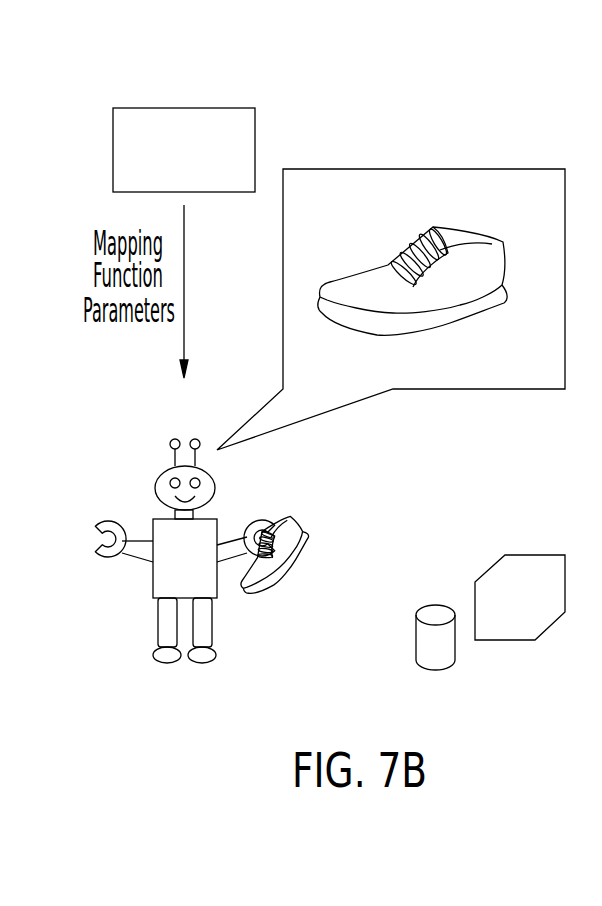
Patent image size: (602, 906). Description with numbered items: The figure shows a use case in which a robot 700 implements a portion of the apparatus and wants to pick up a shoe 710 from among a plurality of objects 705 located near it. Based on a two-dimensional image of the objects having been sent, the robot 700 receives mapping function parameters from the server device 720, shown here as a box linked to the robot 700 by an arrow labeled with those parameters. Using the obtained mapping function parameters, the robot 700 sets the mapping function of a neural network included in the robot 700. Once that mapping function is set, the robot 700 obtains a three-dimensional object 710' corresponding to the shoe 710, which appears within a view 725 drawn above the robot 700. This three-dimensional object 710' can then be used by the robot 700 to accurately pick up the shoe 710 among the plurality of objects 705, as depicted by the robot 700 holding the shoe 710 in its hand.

The server device 720 is at (178, 107).
The view 725 is at (342, 168).
The 3D object 710' is at (412, 268).
The robot 700 is at (162, 472).
The shoe 710 is at (272, 579).
The plurality of objects 705 is at (446, 583).